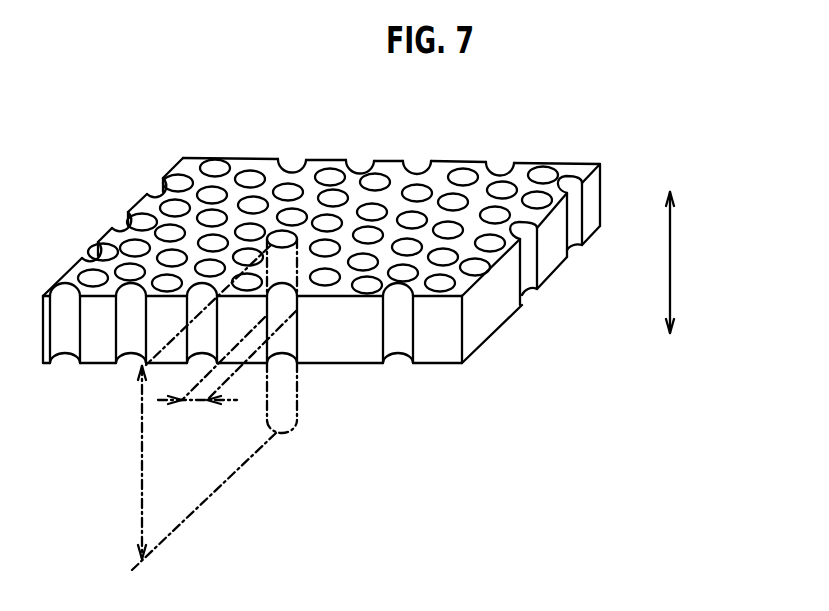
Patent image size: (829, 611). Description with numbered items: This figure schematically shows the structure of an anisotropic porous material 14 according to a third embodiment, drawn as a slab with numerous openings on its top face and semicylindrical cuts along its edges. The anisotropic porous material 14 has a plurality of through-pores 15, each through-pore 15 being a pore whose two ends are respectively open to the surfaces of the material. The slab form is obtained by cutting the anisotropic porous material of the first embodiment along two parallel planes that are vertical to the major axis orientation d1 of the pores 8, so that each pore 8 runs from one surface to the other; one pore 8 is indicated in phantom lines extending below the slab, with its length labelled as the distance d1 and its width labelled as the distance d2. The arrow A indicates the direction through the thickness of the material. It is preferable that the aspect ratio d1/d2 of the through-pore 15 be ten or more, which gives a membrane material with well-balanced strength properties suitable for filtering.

The anisotropic porous material 14 is at (603, 188).
The through-pore 15 is at (415, 340).
The pore 8 is at (297, 398).
The direction A is at (670, 260).
The major axis orientation d1 is at (188, 408).
The minor axis dimension d2 is at (227, 375).